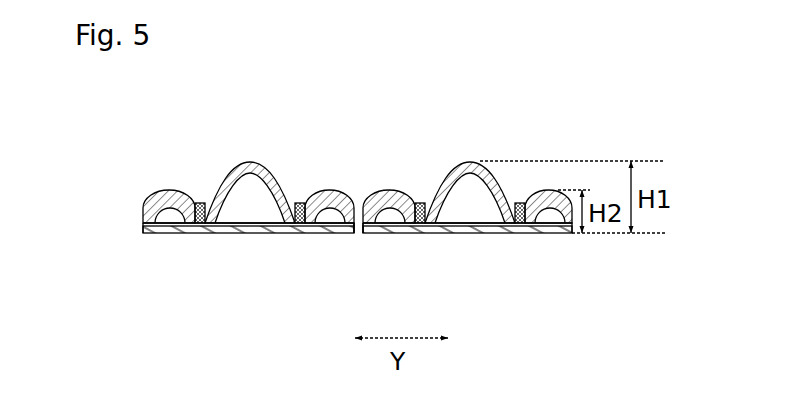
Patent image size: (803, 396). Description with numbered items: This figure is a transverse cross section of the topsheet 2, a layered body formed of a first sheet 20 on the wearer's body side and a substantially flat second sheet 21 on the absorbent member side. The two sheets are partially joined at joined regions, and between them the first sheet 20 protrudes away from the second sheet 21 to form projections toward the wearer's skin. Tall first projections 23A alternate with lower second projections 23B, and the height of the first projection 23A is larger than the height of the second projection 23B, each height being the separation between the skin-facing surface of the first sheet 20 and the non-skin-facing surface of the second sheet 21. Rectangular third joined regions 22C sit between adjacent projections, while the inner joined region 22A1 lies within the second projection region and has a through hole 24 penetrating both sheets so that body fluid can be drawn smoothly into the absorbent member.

The topsheet 2 is at (507, 130).
The first sheet 20 is at (143, 212).
The second sheet 21 is at (175, 232).
The inner joined region 22A1 is at (358, 244).
The third joined region 22C is at (299, 233).
The first projection 23A is at (238, 155).
The second projection 23B is at (165, 185).
The through hole 24 is at (357, 222).